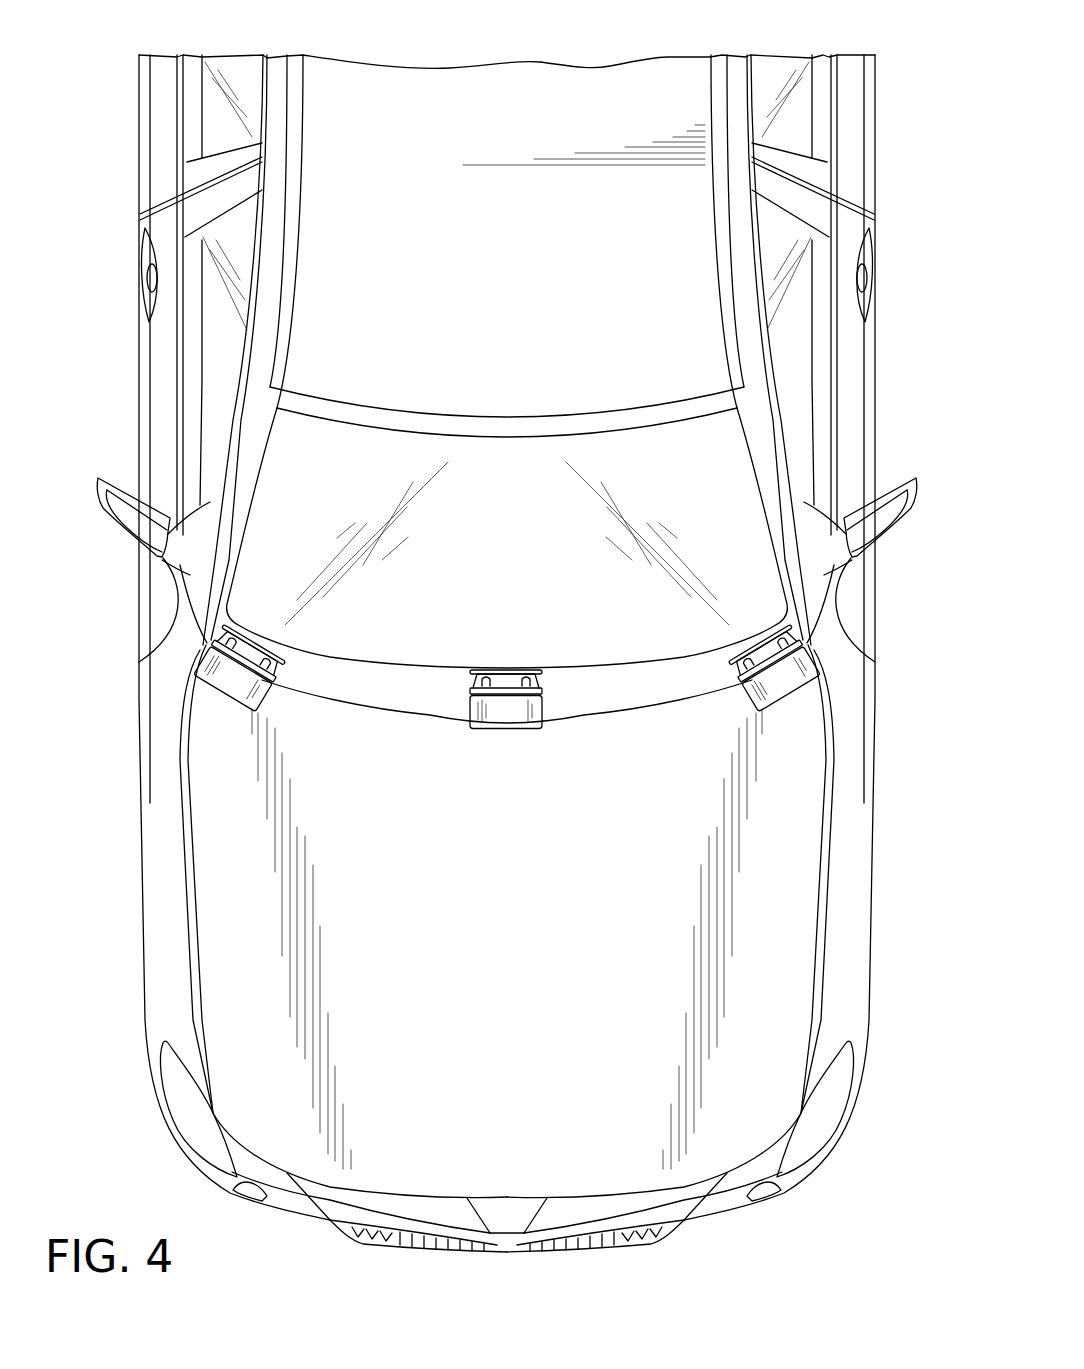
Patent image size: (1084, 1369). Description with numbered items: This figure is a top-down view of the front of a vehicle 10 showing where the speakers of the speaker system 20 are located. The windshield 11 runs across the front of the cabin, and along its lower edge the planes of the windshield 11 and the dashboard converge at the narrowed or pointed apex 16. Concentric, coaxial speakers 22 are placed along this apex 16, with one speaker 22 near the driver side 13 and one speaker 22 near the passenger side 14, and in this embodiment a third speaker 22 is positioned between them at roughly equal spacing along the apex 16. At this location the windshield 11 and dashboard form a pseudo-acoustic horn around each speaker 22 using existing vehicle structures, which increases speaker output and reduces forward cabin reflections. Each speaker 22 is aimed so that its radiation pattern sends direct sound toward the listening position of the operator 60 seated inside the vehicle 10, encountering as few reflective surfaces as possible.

The vehicle 10 is at (872, 942).
The windshield 11 is at (762, 498).
The driver side 13 is at (892, 669).
The passenger side 14 is at (112, 712).
The apex 16 is at (690, 703).
The speaker system 20 is at (415, 992).
The concentric, coaxial speaker 22 is at (247, 680).
The operator 60 is at (612, 95).